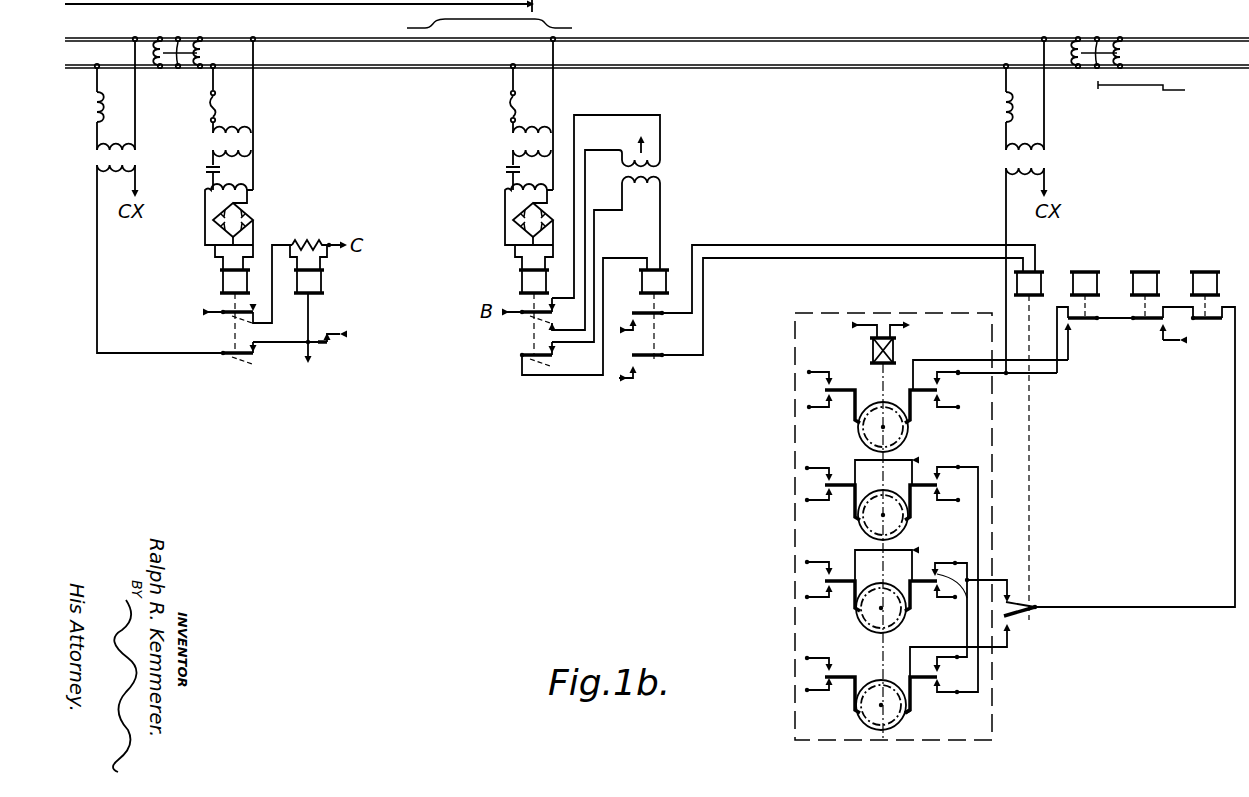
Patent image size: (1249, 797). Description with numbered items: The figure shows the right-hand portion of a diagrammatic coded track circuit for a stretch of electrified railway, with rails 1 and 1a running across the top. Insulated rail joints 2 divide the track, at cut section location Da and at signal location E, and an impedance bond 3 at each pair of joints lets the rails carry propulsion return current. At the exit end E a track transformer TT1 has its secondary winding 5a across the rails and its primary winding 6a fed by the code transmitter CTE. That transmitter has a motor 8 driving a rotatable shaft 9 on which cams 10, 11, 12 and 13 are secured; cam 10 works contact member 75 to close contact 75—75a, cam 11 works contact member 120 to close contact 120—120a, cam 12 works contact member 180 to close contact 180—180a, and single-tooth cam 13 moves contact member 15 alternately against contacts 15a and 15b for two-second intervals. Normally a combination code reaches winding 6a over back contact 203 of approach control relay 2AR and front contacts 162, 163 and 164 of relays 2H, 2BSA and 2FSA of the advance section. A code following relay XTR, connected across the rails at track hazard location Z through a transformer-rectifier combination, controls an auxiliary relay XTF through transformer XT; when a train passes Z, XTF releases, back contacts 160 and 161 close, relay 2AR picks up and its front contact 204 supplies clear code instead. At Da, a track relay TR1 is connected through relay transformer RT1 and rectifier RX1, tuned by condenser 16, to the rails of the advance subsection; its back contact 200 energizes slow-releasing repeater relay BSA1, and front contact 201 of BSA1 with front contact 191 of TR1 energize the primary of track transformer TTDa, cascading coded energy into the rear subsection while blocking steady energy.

The track rail 1 is at (760, 38).
The track rail 1a is at (769, 70).
The insulated rail joints 2 is at (178, 67).
The impedance bond 3 is at (203, 53).
The secondary winding 5a is at (1006, 123).
The primary winding 6a is at (1026, 178).
The motor 8 is at (894, 347).
The rotatable shaft 9 is at (881, 381).
The cam 10 is at (865, 433).
The cam 11 is at (866, 526).
The cam 12 is at (866, 620).
The cam 13 is at (868, 717).
The contact member 15 is at (933, 696).
The contact 15a is at (938, 664).
The contact 15b is at (938, 692).
The condenser 16 is at (205, 170).
The contact member 75 is at (937, 409).
The contact 75a is at (939, 380).
The contact member 120 is at (937, 502).
The contact 120a is at (938, 478).
The back contact 160 is at (640, 328).
The back contact 161 is at (640, 371).
The front contact 162 is at (1225, 316).
The front contact 163 is at (1165, 316).
The front contact 164 is at (1070, 316).
The contact member 180 is at (937, 597).
The contact 180a is at (942, 609).
The front contact 191 is at (254, 355).
The back contact 200 is at (246, 325).
The front contact 201 is at (322, 344).
The back contact 203 is at (1007, 622).
The front contact 204 is at (1012, 600).
The cut section location Da is at (178, 38).
The signal location E is at (1097, 38).
The track hazard location Z is at (489, 17).
The track transformer TTDa is at (132, 159).
The relay transformer RT1 is at (256, 138).
The rectifier RX1 is at (254, 220).
The track relay TR1 is at (222, 287).
The repeater relay BSA1 is at (318, 287).
The code following relay XTR is at (521, 285).
The transformer XT is at (661, 178).
The auxiliary relay XTF is at (667, 287).
The track transformer TT1 is at (1049, 205).
The approach control relay 2AR is at (1016, 286).
The relay 2FSA is at (1085, 272).
The relay 2BSA is at (1145, 272).
The relay 2H is at (1205, 272).
The code transmitter CTE is at (795, 491).